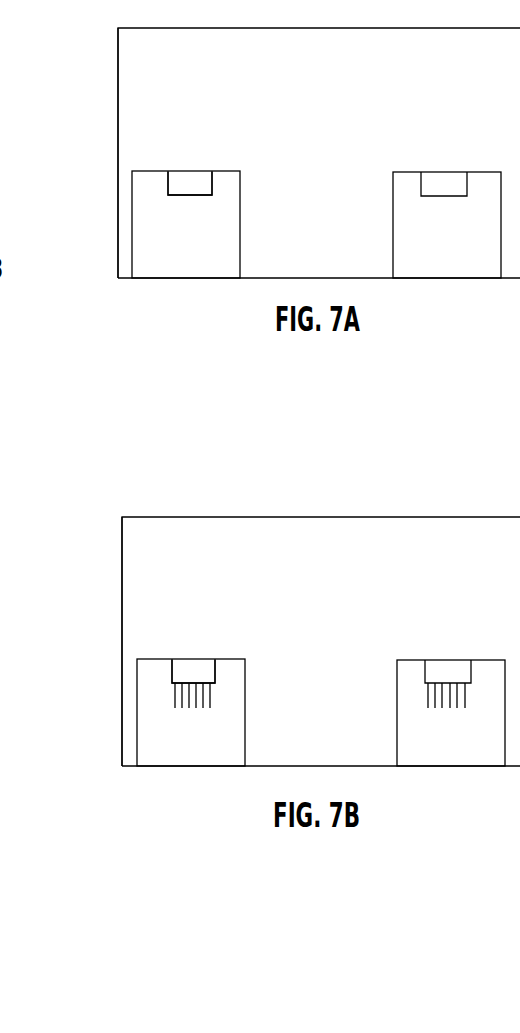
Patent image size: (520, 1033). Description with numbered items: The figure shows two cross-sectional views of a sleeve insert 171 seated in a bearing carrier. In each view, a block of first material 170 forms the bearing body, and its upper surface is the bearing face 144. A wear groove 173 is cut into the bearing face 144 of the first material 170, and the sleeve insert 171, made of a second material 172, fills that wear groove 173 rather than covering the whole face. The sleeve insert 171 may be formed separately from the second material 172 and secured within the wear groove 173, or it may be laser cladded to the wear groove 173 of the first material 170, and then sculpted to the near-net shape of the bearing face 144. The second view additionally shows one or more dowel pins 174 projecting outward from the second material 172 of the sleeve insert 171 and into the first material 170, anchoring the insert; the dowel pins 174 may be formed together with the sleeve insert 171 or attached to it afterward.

In FIG. 7A, the bearing face 144 is at (146, 171).
In FIG. 7B, the bearing face 144 is at (149, 659).
In FIG. 7A, the first material 170 is at (148, 218).
In FIG. 7B, the first material 170 is at (152, 705).
In FIG. 7A, the sleeve insert 171 is at (187, 141).
In FIG. 7B, the sleeve insert 171 is at (192, 631).
In FIG. 7A, the second material 172 is at (198, 171).
In FIG. 7B, the second material 172 is at (202, 659).
In FIG. 7A, the wear groove 173 is at (212, 186).
In FIG. 7B, the wear groove 173 is at (215, 672).
In FIG. 7B, the dowel pins 174 is at (213, 706).